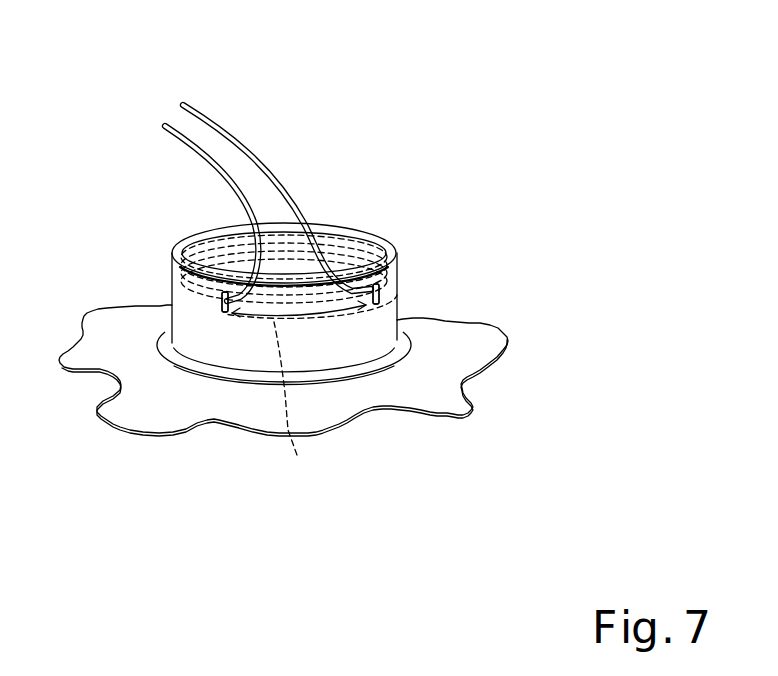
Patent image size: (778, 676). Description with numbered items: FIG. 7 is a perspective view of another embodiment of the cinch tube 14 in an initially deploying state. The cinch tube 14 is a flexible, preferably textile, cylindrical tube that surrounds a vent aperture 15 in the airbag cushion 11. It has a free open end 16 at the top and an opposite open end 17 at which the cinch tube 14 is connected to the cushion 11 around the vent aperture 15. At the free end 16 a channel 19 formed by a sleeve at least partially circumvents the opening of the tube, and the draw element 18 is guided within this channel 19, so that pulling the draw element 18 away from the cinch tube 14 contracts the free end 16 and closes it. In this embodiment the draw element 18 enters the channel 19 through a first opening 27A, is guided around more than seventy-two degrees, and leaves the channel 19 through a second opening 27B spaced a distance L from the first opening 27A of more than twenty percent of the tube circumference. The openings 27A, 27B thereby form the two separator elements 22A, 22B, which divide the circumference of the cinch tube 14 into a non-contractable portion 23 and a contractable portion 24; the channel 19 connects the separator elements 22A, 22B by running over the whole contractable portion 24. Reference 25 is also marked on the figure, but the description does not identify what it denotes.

The airbag cushion 11 is at (417, 388).
The cinch tube 14 is at (306, 294).
The vent aperture 15 is at (228, 363).
The free open end 16 is at (388, 240).
The opposite open end 17 is at (341, 368).
The draw element 18 is at (222, 163).
The channel 19 is at (225, 297).
The first separator element 22A is at (224, 306).
The second separator element 22B is at (388, 297).
The non-contractable portion 23 is at (297, 413).
The contractable portion 24 is at (215, 230).
The groove 25 is at (178, 292).
The first opening 27A is at (170, 337).
The second opening 27B is at (475, 280).